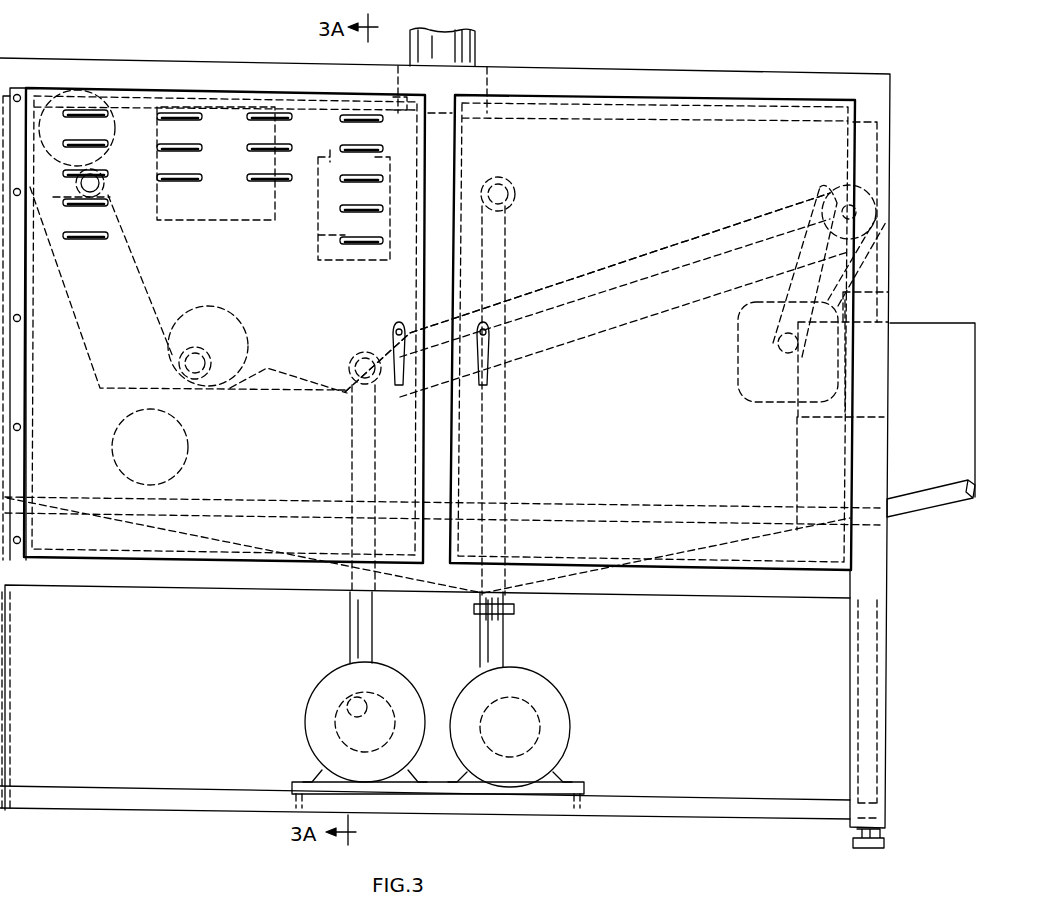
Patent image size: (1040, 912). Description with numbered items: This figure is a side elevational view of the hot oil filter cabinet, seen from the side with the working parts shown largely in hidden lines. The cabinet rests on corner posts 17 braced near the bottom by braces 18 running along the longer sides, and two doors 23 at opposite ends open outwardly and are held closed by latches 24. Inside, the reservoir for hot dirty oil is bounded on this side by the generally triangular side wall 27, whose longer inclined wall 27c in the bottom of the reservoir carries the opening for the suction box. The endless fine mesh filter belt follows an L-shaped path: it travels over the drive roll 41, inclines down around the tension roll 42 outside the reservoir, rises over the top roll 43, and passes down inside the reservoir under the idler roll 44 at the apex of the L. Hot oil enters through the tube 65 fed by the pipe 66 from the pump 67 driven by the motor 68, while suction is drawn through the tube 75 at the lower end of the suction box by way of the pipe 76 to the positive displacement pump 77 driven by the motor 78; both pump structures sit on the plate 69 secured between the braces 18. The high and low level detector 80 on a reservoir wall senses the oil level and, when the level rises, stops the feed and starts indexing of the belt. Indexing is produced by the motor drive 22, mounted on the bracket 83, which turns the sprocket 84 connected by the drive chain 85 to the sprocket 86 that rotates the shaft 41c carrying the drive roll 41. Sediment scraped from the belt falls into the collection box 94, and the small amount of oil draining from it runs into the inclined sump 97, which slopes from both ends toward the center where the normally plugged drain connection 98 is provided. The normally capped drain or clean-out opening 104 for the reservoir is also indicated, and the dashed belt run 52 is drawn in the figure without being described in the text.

The corner post 17 is at (868, 757).
The brace 18 is at (665, 803).
The motor drive 22 is at (740, 358).
The door 23 is at (256, 438).
The latch 24 is at (472, 355).
The side wall 27 is at (88, 363).
The inclined wall 27c is at (582, 274).
The drive roll 41 is at (873, 205).
The shaft 41c is at (866, 228).
The tension roll 42 is at (188, 455).
The top roll 43 is at (104, 110).
The idler roll 44 is at (238, 318).
The belt 52 is at (588, 306).
The tube 65 is at (516, 192).
The pipe 66 is at (497, 460).
The pump 67 is at (567, 692).
The motor 68 is at (540, 726).
The plate 69 is at (545, 795).
The tube 75 is at (360, 355).
The pipe 76 is at (352, 470).
The pump 77 is at (313, 695).
The motor 78 is at (336, 722).
The high and low level detector 80 is at (390, 262).
The bracket 83 is at (872, 290).
The sprocket 84 is at (785, 355).
The drive chain 85 is at (800, 250).
The sprocket 86 is at (836, 195).
The collection box 94 is at (960, 452).
The sump 97 is at (222, 545).
The drain connection 98 is at (516, 602).
The drain or clean-out opening 104 is at (212, 340).